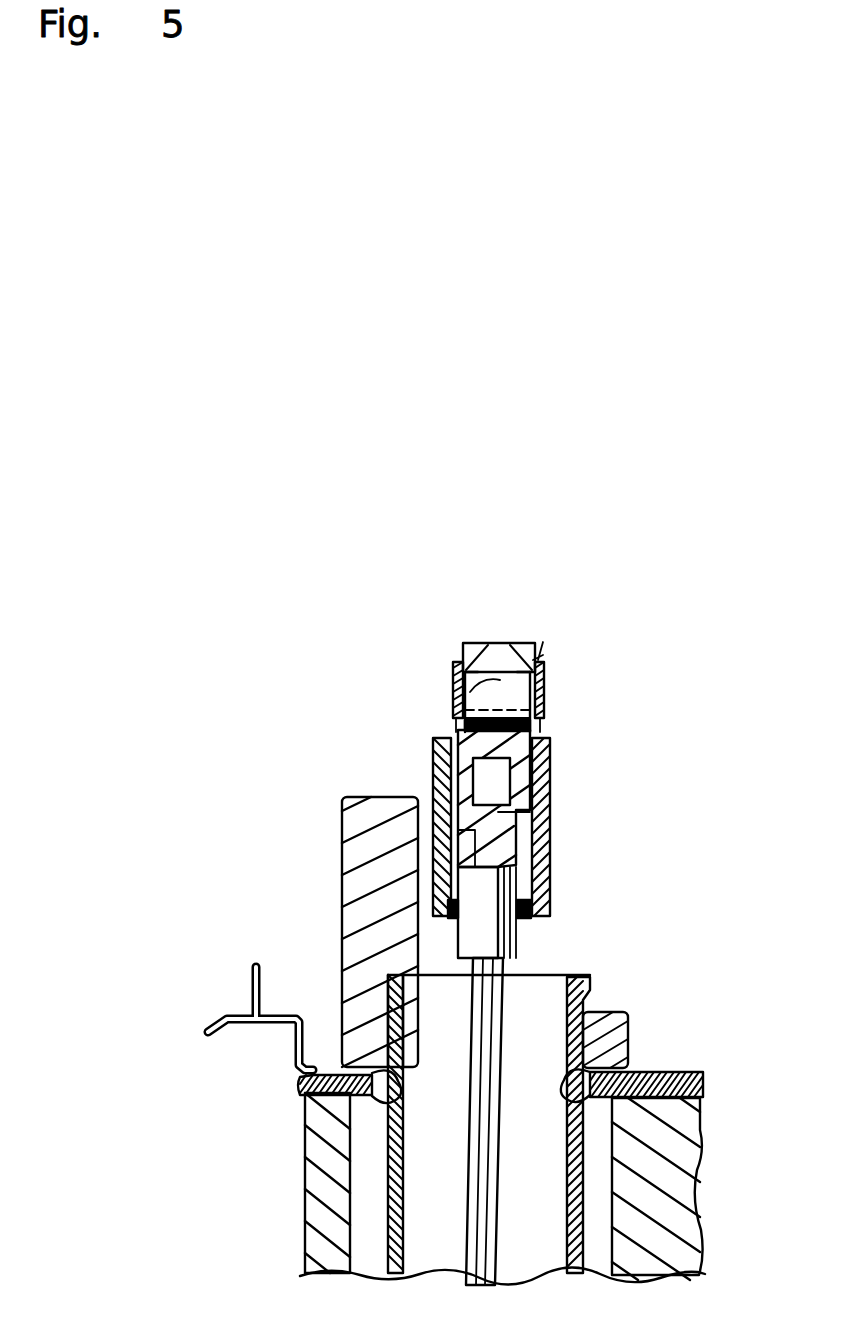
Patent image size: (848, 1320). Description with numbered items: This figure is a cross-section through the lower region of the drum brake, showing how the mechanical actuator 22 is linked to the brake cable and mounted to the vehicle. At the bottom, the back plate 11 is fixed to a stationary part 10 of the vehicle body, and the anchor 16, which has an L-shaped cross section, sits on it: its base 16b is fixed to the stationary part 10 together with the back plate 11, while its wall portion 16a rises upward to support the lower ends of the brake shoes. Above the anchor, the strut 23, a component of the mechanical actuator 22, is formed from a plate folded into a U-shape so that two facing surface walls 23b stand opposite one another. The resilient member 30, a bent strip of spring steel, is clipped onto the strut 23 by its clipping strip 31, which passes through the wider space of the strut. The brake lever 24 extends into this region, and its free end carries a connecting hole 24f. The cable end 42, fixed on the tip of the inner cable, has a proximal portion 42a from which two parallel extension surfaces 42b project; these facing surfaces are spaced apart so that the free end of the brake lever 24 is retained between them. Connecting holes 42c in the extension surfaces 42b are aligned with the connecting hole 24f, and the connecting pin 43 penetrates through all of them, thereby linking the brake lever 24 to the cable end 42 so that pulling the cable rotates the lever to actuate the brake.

The stationary part 10 is at (705, 1200).
The back plate 11 is at (713, 1070).
The anchor 16 is at (332, 852).
The wall portion 16a is at (362, 922).
The base 16b is at (630, 1033).
The mechanical actuator 22 is at (398, 750).
The strut 23 is at (497, 812).
The facing surface walls 23b is at (574, 801).
The brake lever 24 is at (488, 636).
The connecting hole 24f is at (470, 690).
The resilient member 30 is at (541, 658).
The clipping strip 31 is at (518, 928).
The cable end 42 is at (548, 795).
The proximal portion 42a is at (500, 847).
The extension surfaces 42b is at (460, 662).
The connecting holes 42c is at (455, 680).
The connecting pin 43 is at (542, 703).